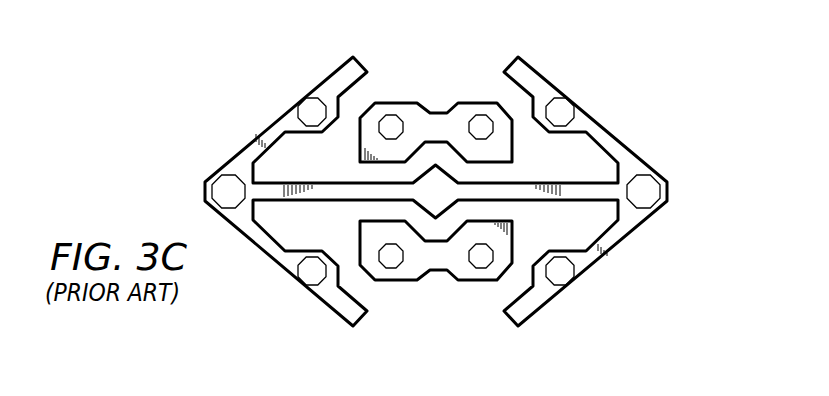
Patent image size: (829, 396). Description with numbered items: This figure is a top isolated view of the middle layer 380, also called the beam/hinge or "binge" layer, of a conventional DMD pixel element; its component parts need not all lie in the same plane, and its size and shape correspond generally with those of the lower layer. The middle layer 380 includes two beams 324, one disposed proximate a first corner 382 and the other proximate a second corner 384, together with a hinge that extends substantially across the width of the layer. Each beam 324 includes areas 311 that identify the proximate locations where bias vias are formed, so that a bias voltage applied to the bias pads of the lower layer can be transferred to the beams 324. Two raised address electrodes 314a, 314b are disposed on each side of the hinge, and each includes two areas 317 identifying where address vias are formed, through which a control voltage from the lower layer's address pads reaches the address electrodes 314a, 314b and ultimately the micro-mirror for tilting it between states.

The middle layer 380 is at (645, 108).
The beam 324 is at (262, 133).
The first corner 382 is at (205, 190).
The second corner 384 is at (668, 193).
The area 311 is at (567, 107).
The first address electrode 314a is at (409, 103).
The second address electrode 314b is at (463, 282).
The area 317 is at (478, 118).